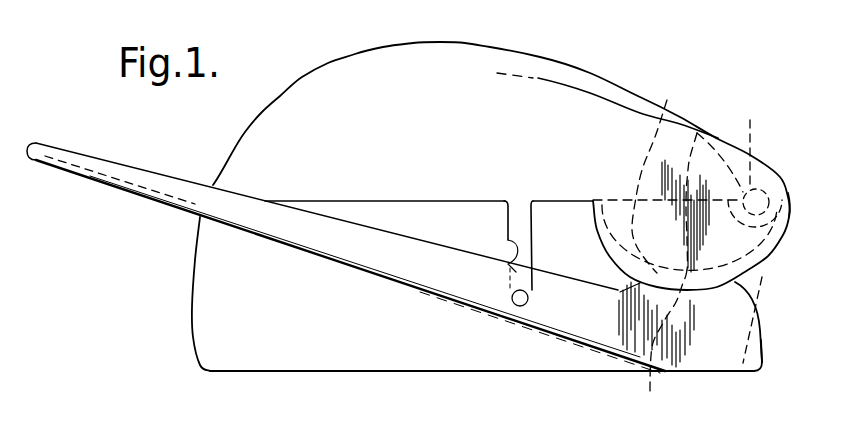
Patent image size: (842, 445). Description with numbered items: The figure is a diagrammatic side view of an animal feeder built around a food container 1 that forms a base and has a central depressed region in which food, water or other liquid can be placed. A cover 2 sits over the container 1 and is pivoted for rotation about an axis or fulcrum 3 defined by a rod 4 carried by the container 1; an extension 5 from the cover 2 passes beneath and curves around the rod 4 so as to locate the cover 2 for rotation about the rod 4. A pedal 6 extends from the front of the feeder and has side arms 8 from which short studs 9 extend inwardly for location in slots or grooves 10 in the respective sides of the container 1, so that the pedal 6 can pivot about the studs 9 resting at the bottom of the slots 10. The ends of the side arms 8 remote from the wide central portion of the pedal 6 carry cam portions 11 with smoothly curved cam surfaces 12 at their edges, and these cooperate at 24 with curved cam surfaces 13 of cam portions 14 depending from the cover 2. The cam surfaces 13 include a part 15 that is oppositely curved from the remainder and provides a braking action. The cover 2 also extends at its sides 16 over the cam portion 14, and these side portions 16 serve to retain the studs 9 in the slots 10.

The food container 1 is at (200, 308).
The cover 2 is at (316, 90).
The axis or fulcrum 3 is at (763, 197).
The rod 4 is at (741, 139).
The extension 5 is at (790, 201).
The pedal 6 is at (126, 168).
The side arms 8 is at (422, 277).
The studs 9 is at (527, 302).
The slots or grooves 10 is at (504, 268).
The cam portions 11 is at (722, 332).
The cam surfaces 12 is at (766, 347).
The curved cam surfaces 13 is at (661, 116).
The cam portions 14 is at (702, 135).
The part 15 is at (761, 244).
The sides 16 is at (751, 287).
The cooperation point 24 is at (656, 348).